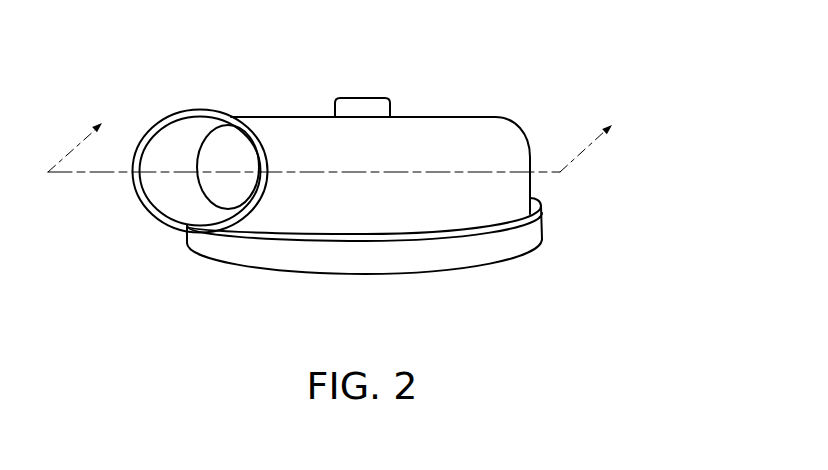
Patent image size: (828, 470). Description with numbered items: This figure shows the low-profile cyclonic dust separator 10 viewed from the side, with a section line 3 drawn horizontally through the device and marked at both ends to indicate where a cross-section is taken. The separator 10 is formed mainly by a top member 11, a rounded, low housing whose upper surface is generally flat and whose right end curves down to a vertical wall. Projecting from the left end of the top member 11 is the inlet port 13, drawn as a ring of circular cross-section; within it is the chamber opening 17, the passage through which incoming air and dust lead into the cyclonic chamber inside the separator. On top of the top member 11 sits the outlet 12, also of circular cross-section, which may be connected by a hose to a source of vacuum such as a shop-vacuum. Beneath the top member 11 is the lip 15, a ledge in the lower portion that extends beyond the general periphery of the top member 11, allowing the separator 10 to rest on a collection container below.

The section line 3- 3 is at (339, 137).
The dust separator 10 is at (528, 46).
The top member 11 is at (260, 122).
The outlet 12 is at (345, 79).
The inlet port 13 is at (128, 192).
The lip 15 is at (510, 238).
The chamber opening 17 is at (225, 178).